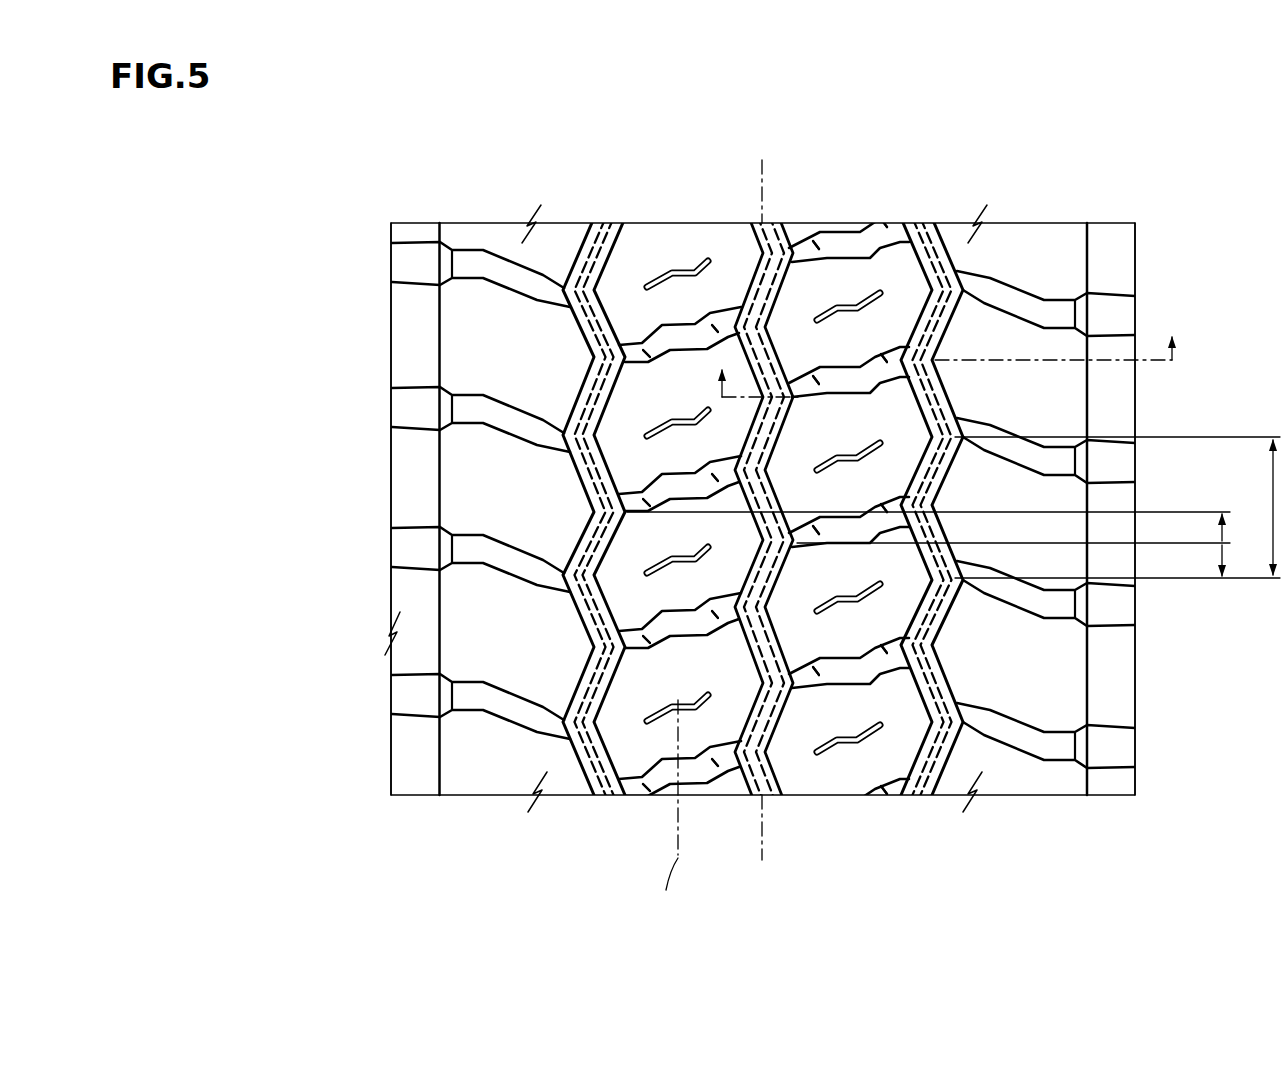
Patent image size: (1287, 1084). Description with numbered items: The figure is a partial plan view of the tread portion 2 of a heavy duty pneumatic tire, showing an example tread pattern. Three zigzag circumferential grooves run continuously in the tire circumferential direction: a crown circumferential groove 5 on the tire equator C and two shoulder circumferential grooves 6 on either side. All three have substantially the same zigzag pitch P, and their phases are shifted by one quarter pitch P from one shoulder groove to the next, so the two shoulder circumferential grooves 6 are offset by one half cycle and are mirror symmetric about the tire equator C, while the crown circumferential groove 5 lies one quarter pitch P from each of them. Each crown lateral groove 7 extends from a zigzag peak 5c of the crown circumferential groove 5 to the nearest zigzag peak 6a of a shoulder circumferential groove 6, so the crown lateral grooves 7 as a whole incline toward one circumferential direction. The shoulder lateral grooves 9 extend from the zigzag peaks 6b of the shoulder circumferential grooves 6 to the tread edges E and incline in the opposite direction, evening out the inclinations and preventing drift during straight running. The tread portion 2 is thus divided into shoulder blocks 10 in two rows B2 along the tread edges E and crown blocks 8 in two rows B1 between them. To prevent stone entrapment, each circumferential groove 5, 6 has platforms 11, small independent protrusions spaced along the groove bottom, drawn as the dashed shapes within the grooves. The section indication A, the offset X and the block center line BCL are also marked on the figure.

The tread portion 2 is at (1040, 215).
The crown circumferential groove 5 is at (781, 232).
The zigzag peak 5c is at (716, 326).
The shoulder circumferential groove 6 is at (598, 230).
The zigzag peak 6a is at (630, 360).
The zigzag peak 6b is at (560, 291).
The crown lateral groove 7 is at (692, 335).
The crown block 8 is at (650, 250).
The shoulder lateral groove 9 is at (482, 555).
The shoulder block 10 is at (462, 237).
The platform 11 is at (572, 255).
The row of crown blocks B1 is at (677, 217).
The row of shoulder blocks B2 is at (508, 212).
The tire equator C is at (761, 495).
The tread edge E is at (392, 326).
The section line A- A is at (947, 353).
The zigzag pitch P is at (1118, 507).
The offset distance X is at (937, 545).
The block center line BCL is at (662, 811).